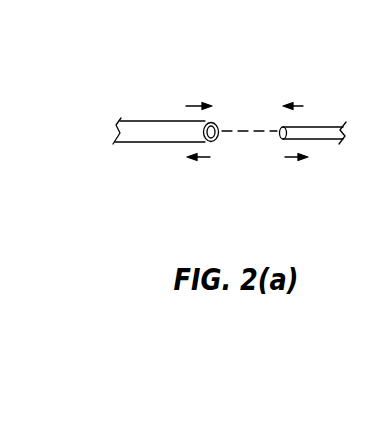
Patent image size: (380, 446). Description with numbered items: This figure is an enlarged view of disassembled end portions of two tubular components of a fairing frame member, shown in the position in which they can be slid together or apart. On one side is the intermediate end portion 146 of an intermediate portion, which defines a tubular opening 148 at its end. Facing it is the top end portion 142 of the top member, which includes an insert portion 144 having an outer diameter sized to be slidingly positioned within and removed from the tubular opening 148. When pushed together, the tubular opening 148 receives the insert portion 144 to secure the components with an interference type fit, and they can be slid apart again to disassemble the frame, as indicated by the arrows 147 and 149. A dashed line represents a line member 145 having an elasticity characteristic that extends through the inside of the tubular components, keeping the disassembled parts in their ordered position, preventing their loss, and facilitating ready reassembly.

The top end portion 142 is at (320, 112).
The insert portion 144 is at (320, 140).
The line member 145 is at (224, 135).
The intermediate end portion 146 is at (143, 121).
The arrows 147 is at (210, 157).
The tubular opening 148 is at (221, 121).
The arrows 149 is at (196, 106).